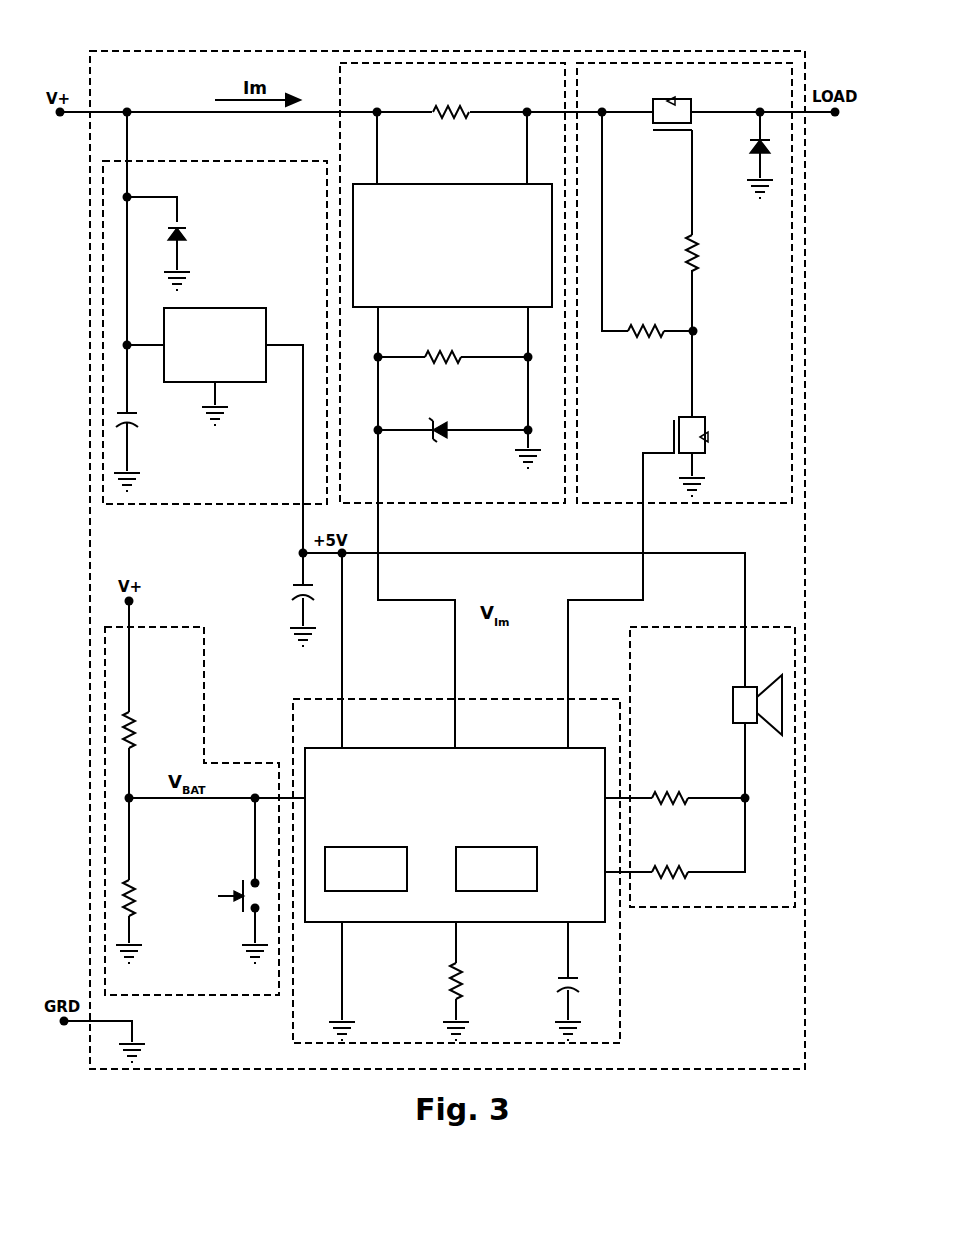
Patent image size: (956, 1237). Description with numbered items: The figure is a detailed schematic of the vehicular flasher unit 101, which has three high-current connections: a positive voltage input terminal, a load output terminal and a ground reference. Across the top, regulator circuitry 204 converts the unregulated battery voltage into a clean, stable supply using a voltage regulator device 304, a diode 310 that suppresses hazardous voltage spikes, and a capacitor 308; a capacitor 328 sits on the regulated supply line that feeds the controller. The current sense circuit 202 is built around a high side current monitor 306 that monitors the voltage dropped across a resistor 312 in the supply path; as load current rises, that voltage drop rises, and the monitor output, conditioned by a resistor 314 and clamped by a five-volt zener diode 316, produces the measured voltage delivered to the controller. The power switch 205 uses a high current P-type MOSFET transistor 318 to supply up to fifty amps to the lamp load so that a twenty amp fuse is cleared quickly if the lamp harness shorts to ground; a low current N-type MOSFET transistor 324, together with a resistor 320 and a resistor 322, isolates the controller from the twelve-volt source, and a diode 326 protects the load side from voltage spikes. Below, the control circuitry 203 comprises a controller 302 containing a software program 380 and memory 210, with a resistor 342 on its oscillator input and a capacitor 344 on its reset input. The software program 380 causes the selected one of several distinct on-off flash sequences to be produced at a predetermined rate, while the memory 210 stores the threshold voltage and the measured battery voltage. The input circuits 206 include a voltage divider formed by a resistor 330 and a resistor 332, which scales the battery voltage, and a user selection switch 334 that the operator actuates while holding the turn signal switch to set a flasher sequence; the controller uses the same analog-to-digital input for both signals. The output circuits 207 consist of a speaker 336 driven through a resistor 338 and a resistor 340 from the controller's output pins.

The vehicular flasher unit 101 is at (340, 51).
The regulator circuitry 204 is at (188, 161).
The diode (D1) 310 is at (180, 226).
The voltage regulator device 304 is at (215, 308).
The capacitor (C1) 308 is at (140, 428).
The current sense circuit 202 is at (477, 503).
The resistor (R7) 312 is at (465, 104).
The high side current monitor 306 is at (410, 184).
The resistor (R8) 314 is at (440, 366).
The zener diode (D2) 316 is at (440, 460).
The power switch 205 is at (680, 504).
The transistor (T1) 318 is at (690, 103).
The diode (D3) 326 is at (752, 162).
The resistor (R9) 320 is at (700, 250).
The resistor (R10) 322 is at (642, 327).
The transistor (T2) 324 is at (715, 437).
The capacitor (C2) 328 is at (291, 576).
The input circuits 206 is at (204, 706).
The resistor (R1) 330 is at (140, 712).
The resistor (R2) 332 is at (140, 883).
The user selection switch (SW1) 334 is at (232, 887).
The control circuitry 203 is at (622, 1036).
The controller 302 is at (373, 748).
The software program 380 is at (410, 872).
The memory 210 is at (540, 872).
The resistor (R6) 342 is at (445, 985).
The capacitor (C3) 344 is at (556, 986).
The output circuits 207 is at (760, 908).
The speaker (SPK1) 336 is at (728, 694).
The resistor (R11) 338 is at (669, 773).
The resistor (R12) 340 is at (669, 846).